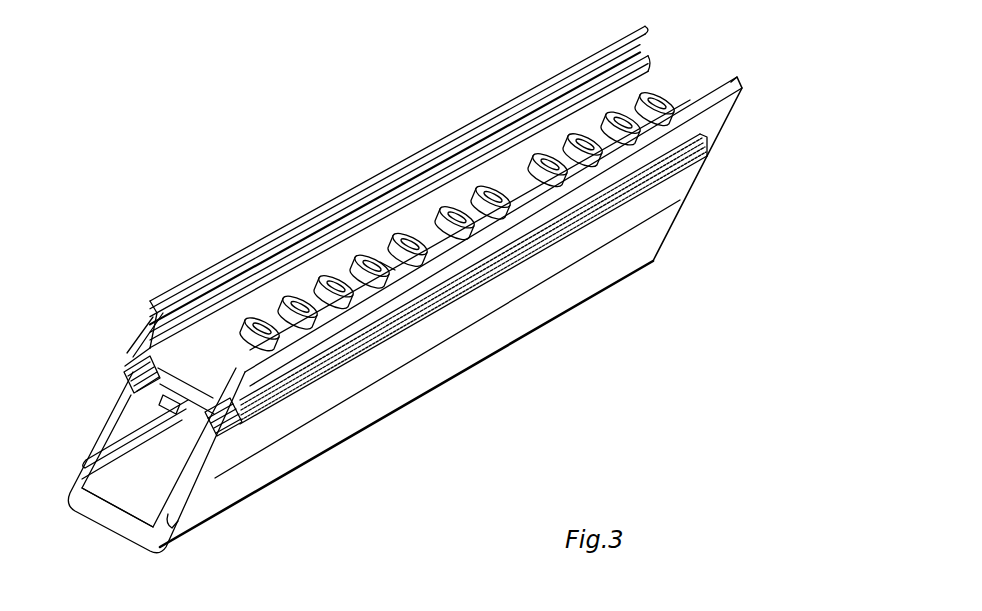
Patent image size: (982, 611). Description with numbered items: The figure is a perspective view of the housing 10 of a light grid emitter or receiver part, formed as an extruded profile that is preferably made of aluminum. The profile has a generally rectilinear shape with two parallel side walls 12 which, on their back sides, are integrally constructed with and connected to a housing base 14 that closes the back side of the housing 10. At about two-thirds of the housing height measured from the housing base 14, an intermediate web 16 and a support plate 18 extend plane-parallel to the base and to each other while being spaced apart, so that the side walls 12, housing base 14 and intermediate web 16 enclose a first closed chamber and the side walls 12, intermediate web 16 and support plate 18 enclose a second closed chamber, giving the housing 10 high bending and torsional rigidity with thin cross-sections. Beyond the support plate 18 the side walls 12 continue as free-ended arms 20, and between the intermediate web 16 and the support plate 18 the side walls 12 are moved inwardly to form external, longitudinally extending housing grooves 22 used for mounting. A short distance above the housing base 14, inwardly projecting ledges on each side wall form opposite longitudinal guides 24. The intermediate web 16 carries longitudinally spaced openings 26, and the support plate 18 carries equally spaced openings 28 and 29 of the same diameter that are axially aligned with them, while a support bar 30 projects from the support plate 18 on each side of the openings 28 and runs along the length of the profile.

The housing 10 is at (326, 92).
The side walls 12 is at (99, 428).
The housing base 14 is at (122, 514).
The intermediate web 16 is at (164, 410).
The support plate 18 is at (262, 318).
The free-ended arms 20 is at (155, 316).
The housing grooves 22 is at (140, 376).
The guides 24 is at (120, 453).
The openings 26 is at (172, 404).
The openings 28 is at (318, 292).
The openings 29 is at (388, 256).
The support bar 30 is at (560, 128).